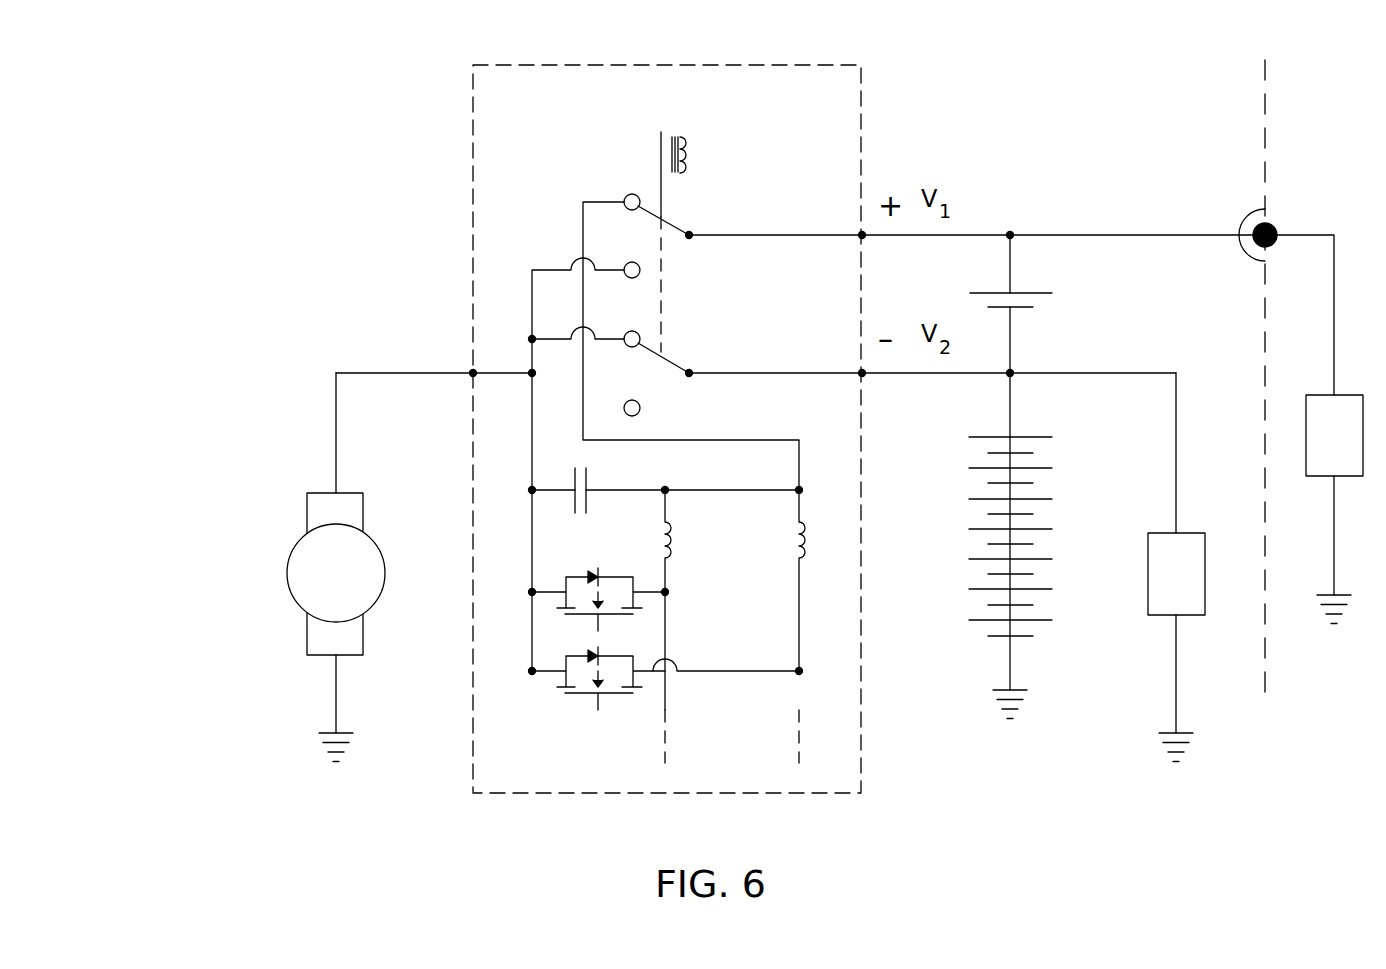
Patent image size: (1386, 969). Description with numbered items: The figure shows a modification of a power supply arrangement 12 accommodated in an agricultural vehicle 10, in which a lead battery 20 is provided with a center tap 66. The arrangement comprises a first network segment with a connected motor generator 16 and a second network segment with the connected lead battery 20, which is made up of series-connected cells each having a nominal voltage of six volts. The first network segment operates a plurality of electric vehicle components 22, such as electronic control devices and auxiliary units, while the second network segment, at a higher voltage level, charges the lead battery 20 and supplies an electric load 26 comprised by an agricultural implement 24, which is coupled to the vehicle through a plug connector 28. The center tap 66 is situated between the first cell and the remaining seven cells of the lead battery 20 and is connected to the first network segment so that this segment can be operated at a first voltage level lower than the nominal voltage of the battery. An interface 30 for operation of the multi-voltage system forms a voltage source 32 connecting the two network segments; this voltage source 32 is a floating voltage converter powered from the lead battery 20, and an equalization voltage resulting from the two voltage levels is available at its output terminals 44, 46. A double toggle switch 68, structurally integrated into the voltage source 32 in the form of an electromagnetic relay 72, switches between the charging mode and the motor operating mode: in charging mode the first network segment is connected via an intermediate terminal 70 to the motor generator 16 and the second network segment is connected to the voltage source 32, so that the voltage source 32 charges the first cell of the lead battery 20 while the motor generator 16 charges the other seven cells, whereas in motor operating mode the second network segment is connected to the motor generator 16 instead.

The agricultural vehicle 10 is at (1237, 97).
The power supply arrangement 12 is at (190, 210).
The motor generator 16 is at (352, 585).
The lead battery 20 is at (1060, 548).
The electric vehicle components 22 is at (1192, 585).
The agricultural implement 24 is at (1320, 97).
The electric load 26 is at (1350, 448).
The plug connector 28 is at (1250, 212).
The interface 30 is at (442, 210).
The voltage source 32 is at (861, 92).
The output terminal 44 is at (862, 373).
The output terminal 46 is at (862, 235).
The center tap 66 is at (1010, 373).
The double toggle switch 68 is at (627, 160).
The intermediate terminal 70 is at (473, 373).
The electromagnetic relay 72 is at (690, 140).